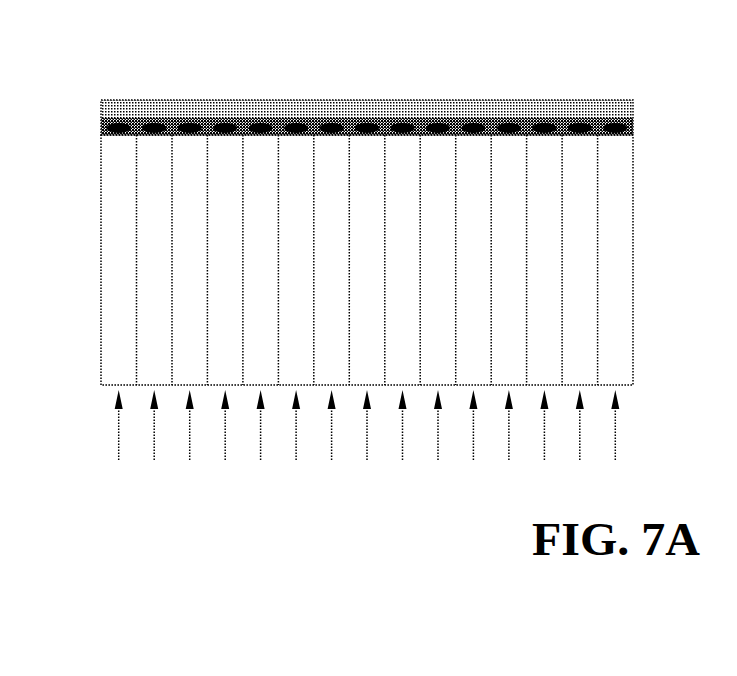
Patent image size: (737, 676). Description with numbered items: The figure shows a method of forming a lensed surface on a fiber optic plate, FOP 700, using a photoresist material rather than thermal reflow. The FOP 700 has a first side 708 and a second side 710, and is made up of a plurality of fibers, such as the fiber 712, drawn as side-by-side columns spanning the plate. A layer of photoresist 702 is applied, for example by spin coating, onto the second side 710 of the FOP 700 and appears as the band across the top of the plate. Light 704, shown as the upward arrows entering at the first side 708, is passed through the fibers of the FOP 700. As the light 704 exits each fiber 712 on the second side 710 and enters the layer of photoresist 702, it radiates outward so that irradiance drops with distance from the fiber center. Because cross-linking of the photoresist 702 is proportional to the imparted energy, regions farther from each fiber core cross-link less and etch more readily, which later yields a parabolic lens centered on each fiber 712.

The FOP 700 is at (645, 319).
The layer of photoresist 702 is at (100, 121).
The light 704 is at (112, 94).
The first side 708 is at (283, 390).
The second side 710 is at (629, 131).
The fiber 712 is at (117, 215).